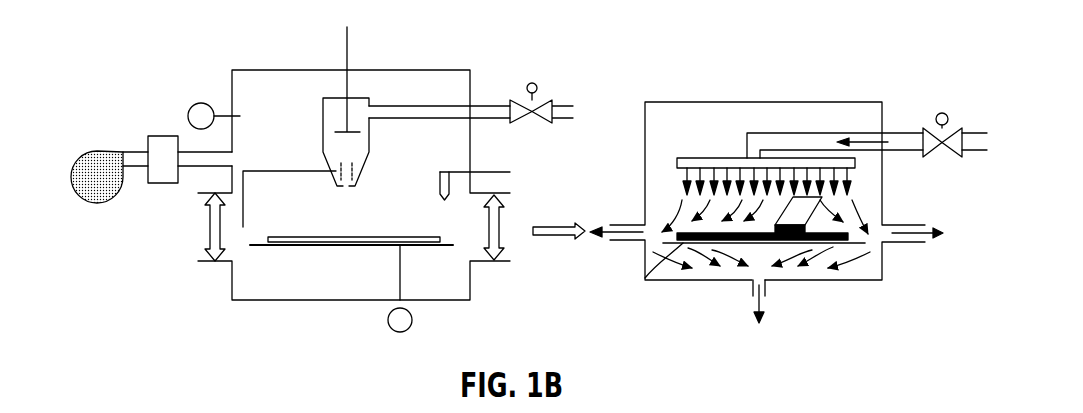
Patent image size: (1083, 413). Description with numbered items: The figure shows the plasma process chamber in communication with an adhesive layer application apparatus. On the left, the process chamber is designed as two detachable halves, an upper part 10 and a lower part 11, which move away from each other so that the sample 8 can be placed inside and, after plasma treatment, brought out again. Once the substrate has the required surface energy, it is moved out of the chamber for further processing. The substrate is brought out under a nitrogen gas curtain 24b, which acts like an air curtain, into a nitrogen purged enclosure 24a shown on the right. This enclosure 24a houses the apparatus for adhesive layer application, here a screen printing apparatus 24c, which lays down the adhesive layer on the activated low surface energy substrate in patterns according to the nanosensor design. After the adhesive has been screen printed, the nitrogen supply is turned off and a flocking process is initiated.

The upper part 10 is at (295, 70).
The sample 8 is at (308, 245).
The lower part 11 is at (343, 300).
The nitrogen purged enclosure 24a is at (677, 102).
The nitrogen gas curtain 24b is at (677, 162).
The screen printing apparatus 24c is at (808, 213).